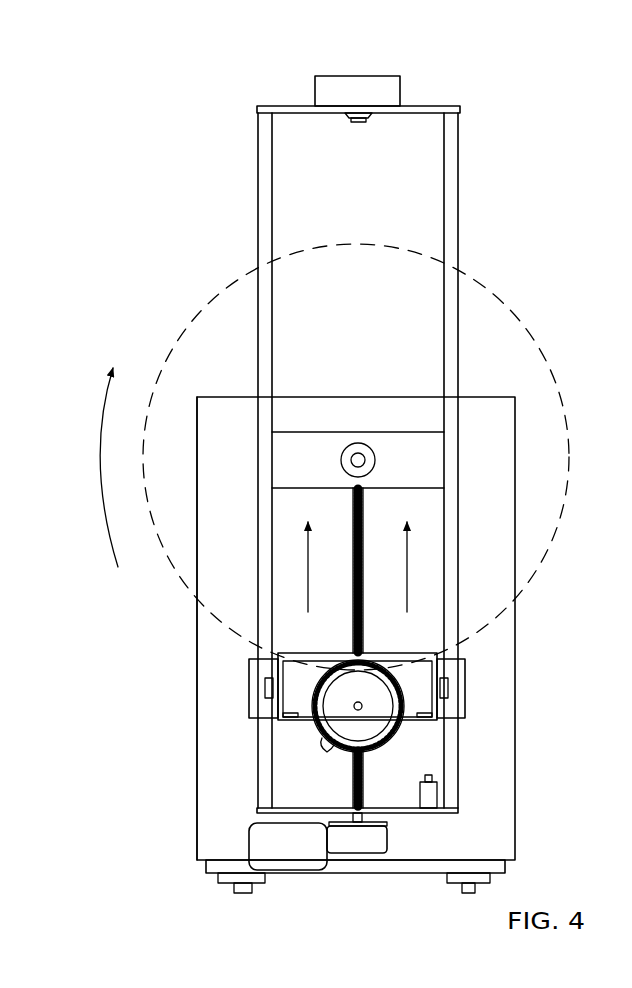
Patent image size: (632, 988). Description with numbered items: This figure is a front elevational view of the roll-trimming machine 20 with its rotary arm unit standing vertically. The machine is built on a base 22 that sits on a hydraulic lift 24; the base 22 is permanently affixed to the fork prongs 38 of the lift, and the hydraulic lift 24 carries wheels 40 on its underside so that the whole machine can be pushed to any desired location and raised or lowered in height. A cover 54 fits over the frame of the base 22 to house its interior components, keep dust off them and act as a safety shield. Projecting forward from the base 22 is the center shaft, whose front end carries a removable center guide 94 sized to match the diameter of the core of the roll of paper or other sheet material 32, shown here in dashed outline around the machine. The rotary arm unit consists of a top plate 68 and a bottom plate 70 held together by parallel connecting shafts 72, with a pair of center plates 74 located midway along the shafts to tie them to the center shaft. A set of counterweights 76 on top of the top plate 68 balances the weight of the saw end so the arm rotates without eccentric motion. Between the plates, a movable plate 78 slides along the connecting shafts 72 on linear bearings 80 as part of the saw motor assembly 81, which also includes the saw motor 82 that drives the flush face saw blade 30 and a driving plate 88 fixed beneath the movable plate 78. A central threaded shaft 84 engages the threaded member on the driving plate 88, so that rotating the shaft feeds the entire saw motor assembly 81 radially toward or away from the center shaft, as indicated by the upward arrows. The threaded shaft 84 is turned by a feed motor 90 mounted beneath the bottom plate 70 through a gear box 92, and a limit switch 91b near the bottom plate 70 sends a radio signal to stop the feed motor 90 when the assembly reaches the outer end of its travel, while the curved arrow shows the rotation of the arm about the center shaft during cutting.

The roll-trimming machine 20 is at (126, 168).
The base 22 is at (498, 433).
The hydraulic lift 24 is at (500, 866).
The flush face saw blade 30 is at (409, 726).
The roll of paper or other sheet material 32 is at (497, 293).
The fork prongs 38 is at (230, 878).
The wheels 40 is at (468, 892).
The cover 54 is at (197, 622).
The top plate 68 is at (283, 108).
The bottom plate 70 is at (300, 810).
The connecting shafts 72 is at (268, 182).
The center plates 74 is at (428, 440).
The counterweights 76 is at (393, 88).
The movable plate 78 is at (386, 655).
The linear bearings 80 is at (260, 705).
The saw motor assembly 81 is at (506, 658).
The saw motor 82 is at (376, 745).
The threaded shaft 84 is at (365, 513).
The driving plate 88 is at (300, 718).
The feed motor 90 is at (258, 843).
The limit switch 91b is at (432, 790).
The gear box 92 is at (363, 847).
The center guide 94 is at (341, 460).